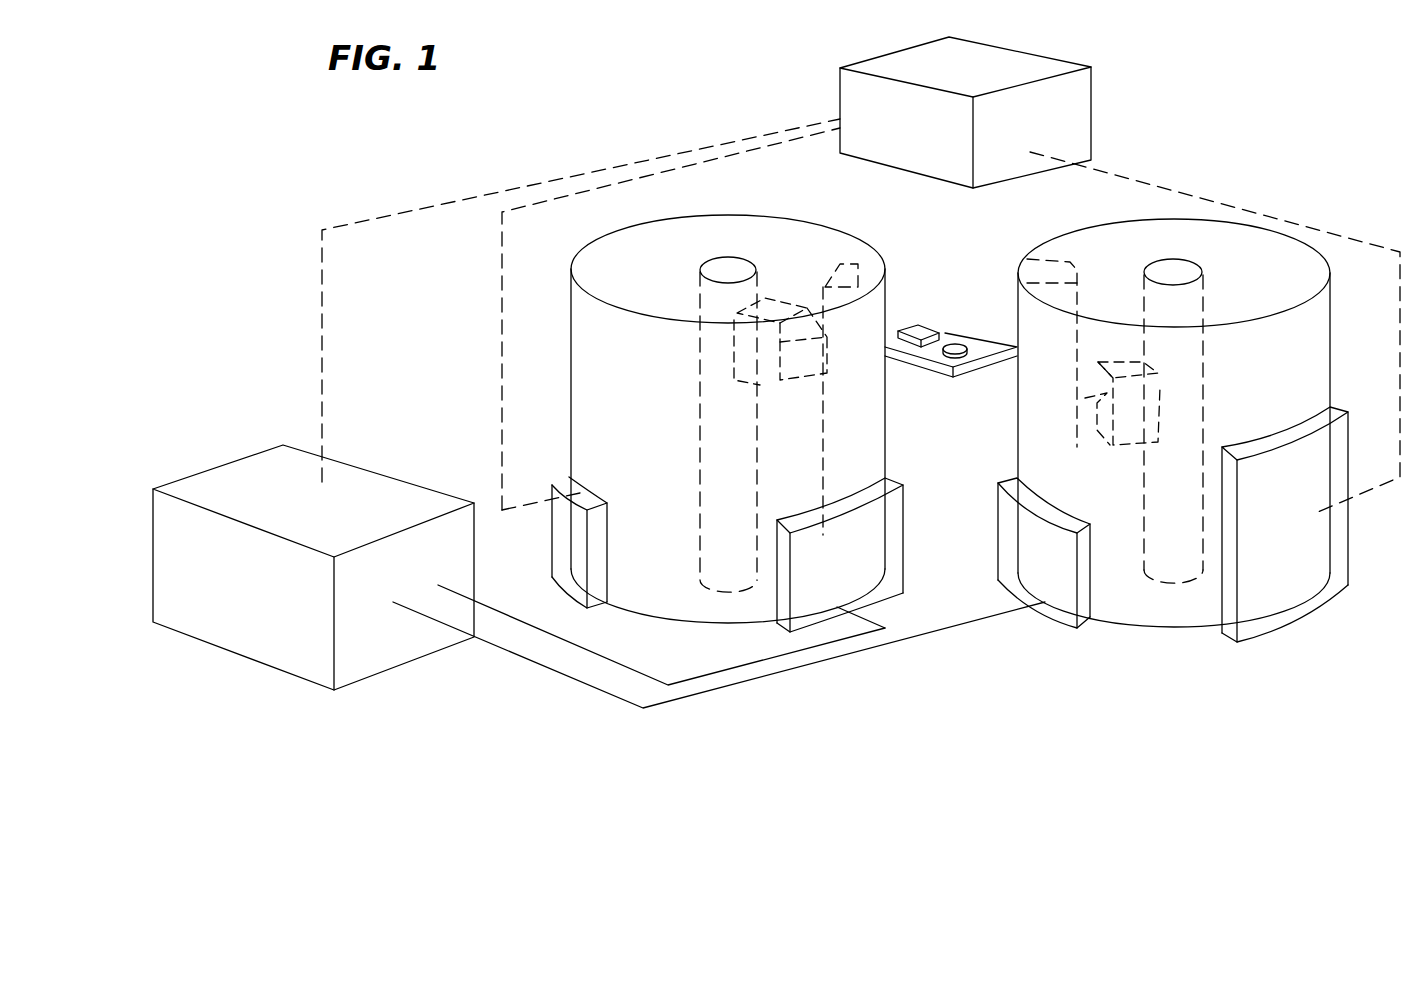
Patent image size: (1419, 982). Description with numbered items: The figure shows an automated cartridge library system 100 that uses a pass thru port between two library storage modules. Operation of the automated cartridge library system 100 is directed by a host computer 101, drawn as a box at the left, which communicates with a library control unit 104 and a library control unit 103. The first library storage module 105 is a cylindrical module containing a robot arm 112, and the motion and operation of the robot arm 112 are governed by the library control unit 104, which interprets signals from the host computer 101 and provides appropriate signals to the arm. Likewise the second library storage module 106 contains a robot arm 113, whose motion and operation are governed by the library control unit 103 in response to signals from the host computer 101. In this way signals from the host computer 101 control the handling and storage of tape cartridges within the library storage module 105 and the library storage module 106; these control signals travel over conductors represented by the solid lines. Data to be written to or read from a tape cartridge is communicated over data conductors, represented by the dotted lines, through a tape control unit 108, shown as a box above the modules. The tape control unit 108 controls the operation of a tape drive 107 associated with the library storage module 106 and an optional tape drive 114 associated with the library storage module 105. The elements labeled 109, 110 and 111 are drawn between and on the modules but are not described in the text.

The automated cartridge library system 100 is at (575, 142).
The host computer 101 is at (227, 474).
The library control unit 103 is at (1028, 550).
The library control unit 104 is at (880, 567).
The library storage module 105 is at (790, 235).
The library storage module 106 is at (1303, 275).
The tape drive 107 is at (1320, 549).
The tape control unit 108 is at (1083, 97).
The sample stage 109 is at (960, 318).
The heater element 110 is at (860, 272).
The heater element 111 is at (1060, 266).
The robot arm 112 is at (753, 348).
The robot arm 113 is at (1143, 400).
The tape drive 114 is at (563, 561).